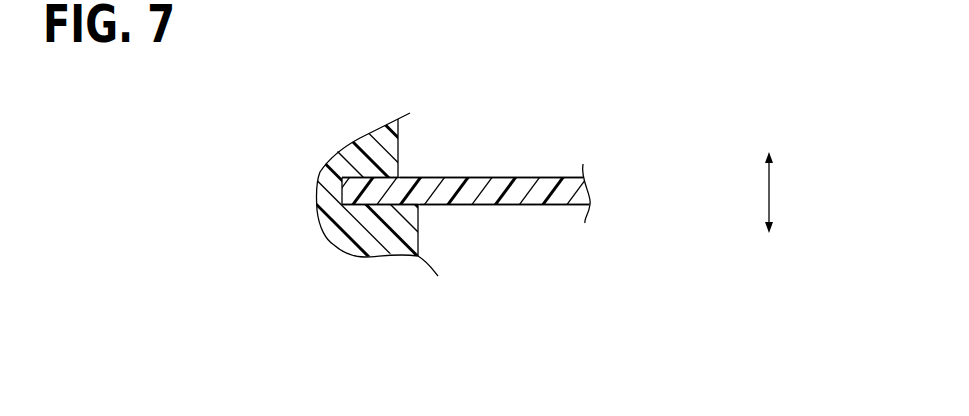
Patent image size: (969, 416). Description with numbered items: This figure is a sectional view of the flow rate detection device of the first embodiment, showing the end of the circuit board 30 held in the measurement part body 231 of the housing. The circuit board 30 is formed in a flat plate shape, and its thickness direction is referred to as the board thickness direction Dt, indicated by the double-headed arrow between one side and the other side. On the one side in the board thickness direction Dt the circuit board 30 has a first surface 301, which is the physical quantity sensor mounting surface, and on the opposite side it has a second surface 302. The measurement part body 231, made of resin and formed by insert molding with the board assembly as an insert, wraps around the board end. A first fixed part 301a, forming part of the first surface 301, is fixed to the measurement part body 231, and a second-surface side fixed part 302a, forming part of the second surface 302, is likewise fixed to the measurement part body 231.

The measurement part body 231 is at (379, 130).
The circuit board 30 is at (586, 193).
The first surface 301 is at (528, 170).
The first fixed part 301a is at (352, 177).
The second surface 302 is at (498, 214).
The second-surface side fixed part 302a is at (383, 206).
The board thickness direction Dt is at (771, 193).